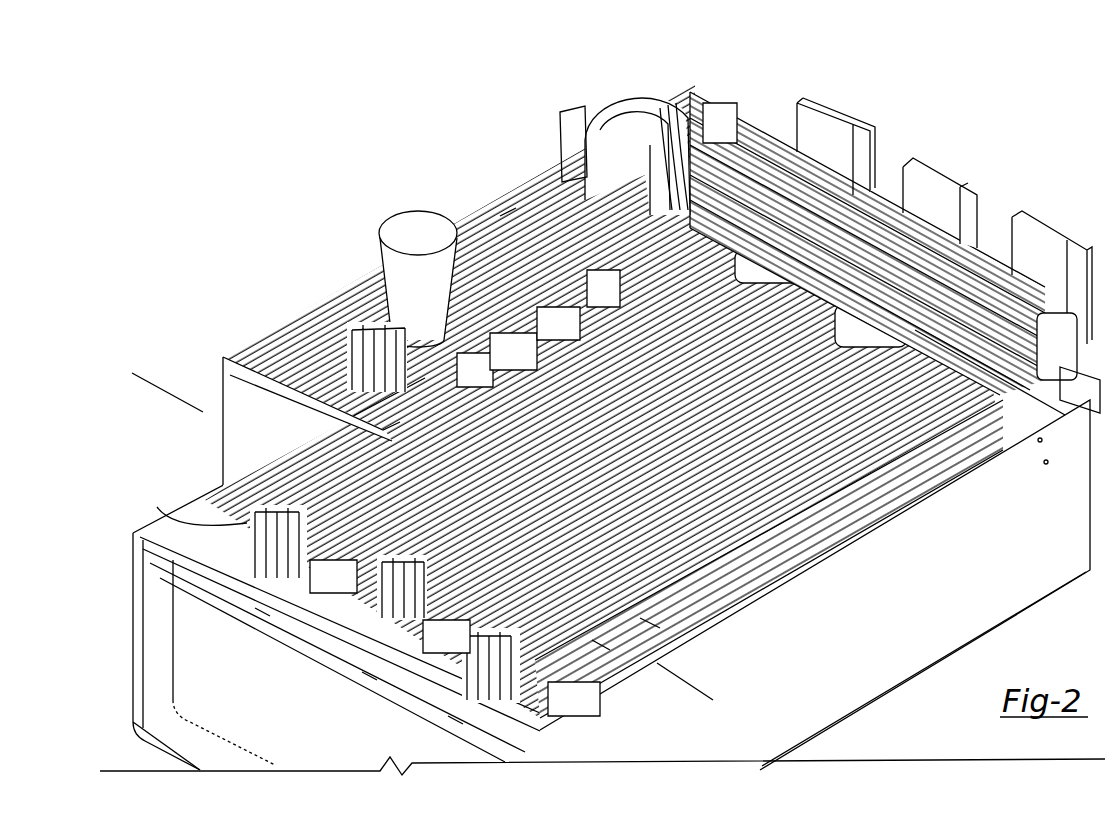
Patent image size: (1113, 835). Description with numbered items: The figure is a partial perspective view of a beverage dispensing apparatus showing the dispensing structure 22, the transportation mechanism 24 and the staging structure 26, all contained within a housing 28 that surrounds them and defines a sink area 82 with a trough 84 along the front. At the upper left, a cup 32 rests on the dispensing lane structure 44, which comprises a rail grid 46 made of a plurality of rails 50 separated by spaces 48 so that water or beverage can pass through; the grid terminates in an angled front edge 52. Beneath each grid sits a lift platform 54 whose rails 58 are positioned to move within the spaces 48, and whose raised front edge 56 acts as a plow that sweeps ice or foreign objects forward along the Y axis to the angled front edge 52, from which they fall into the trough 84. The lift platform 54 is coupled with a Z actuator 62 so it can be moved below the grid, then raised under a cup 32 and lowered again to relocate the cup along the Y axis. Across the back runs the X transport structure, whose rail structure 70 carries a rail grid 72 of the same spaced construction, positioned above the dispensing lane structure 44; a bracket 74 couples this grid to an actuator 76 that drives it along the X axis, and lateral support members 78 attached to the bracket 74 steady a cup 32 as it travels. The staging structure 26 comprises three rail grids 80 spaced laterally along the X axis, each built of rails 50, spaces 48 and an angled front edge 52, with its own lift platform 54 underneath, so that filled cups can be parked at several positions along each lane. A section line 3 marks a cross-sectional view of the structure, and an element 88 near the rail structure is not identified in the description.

The section line 3- 3 is at (105, 420).
The dispensing structure 22 is at (508, 222).
The transportation mechanism 24 is at (686, 110).
The staging structure 26 is at (912, 331).
The housing 28 is at (131, 674).
The cup 32 is at (410, 291).
The dispensing lane structure 44 is at (560, 148).
The rail grid 46 is at (482, 226).
The spaces 48 is at (977, 478).
The rails 50 is at (1007, 463).
The angled front edge 52 is at (262, 612).
The lift platform 54 is at (455, 534).
The raised front edge 56 is at (341, 337).
The rails 58 is at (648, 626).
The Z actuator 62 is at (275, 402).
The rail structure 70 is at (463, 283).
The rail grid 72 is at (716, 226).
The bracket 74 is at (706, 203).
The actuator 76 is at (731, 101).
The lateral support members 78 is at (592, 100).
The rail grids 80 is at (816, 290).
The sink area 82 is at (185, 742).
The trough 84 is at (282, 757).
The cable 88 is at (670, 102).